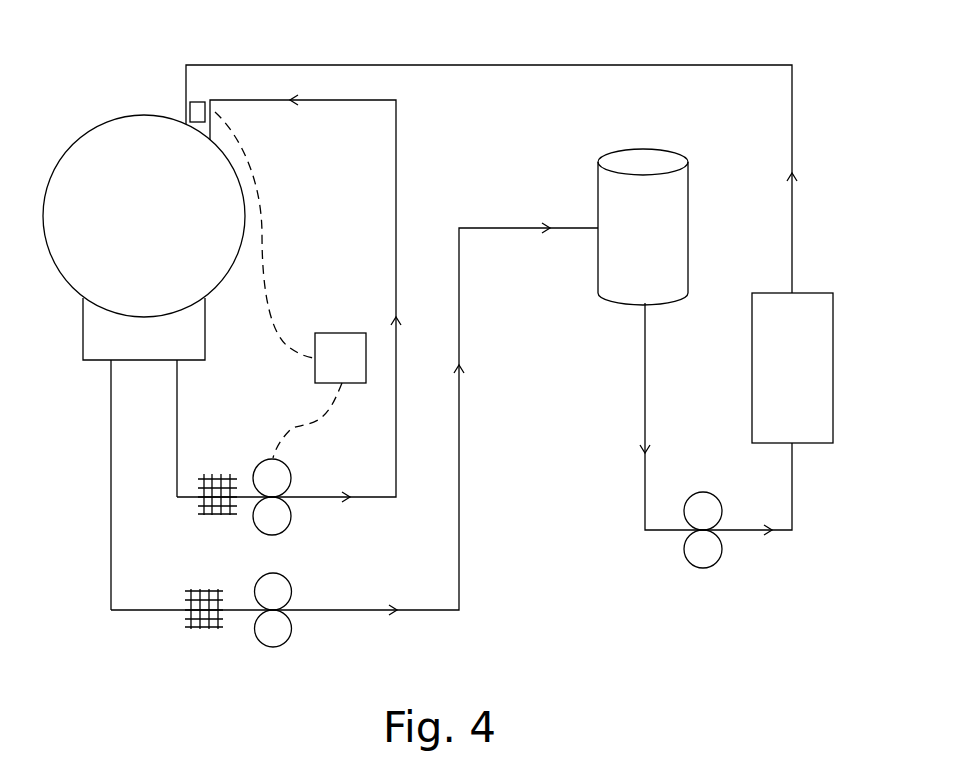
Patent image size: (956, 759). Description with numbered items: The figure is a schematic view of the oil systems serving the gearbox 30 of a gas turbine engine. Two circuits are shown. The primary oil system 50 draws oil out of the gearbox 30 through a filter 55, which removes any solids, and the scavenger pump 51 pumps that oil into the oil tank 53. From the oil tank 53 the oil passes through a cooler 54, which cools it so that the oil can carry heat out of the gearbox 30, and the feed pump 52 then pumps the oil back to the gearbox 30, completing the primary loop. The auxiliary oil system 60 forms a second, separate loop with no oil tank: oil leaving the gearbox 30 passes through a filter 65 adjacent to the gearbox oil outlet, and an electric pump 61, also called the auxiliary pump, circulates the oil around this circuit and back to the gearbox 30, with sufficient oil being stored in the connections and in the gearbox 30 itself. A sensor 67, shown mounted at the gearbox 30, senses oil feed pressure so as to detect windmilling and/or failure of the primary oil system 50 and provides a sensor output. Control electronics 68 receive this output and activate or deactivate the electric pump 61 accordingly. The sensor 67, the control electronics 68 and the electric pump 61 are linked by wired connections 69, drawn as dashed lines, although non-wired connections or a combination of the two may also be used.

The gearbox 30 is at (160, 229).
The primary oil system 50 is at (460, 542).
The scavenger pump 51 is at (283, 631).
The feed pump 52 is at (712, 548).
The oil tank 53 is at (660, 254).
The cooler 54 is at (809, 384).
The filter 55 is at (187, 618).
The auxiliary oil system 60 is at (262, 100).
The electric pump 61 is at (268, 520).
The filter 65 is at (200, 503).
The sensor 67 is at (190, 110).
The control electronics 68 is at (357, 372).
The wired connections 69 is at (307, 418).